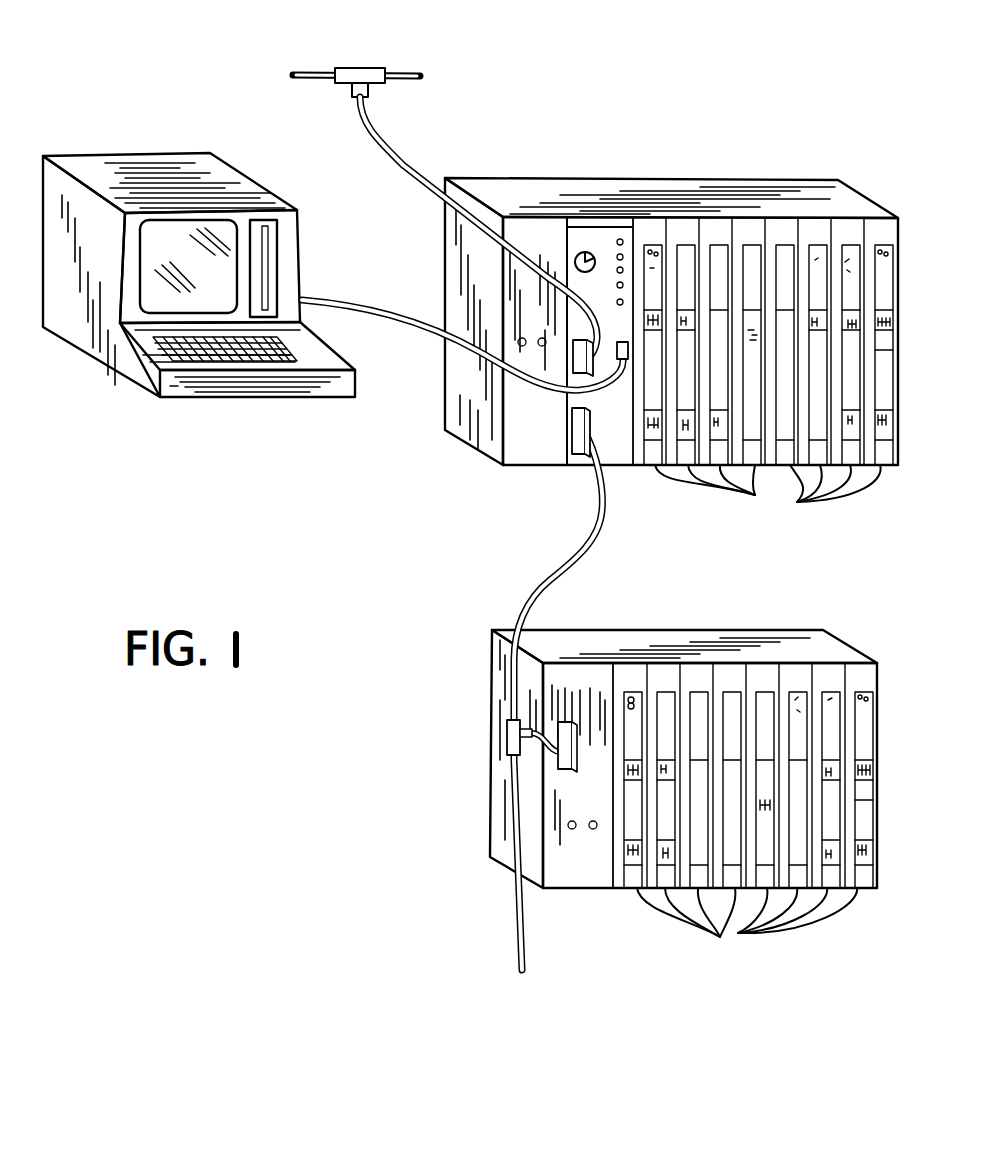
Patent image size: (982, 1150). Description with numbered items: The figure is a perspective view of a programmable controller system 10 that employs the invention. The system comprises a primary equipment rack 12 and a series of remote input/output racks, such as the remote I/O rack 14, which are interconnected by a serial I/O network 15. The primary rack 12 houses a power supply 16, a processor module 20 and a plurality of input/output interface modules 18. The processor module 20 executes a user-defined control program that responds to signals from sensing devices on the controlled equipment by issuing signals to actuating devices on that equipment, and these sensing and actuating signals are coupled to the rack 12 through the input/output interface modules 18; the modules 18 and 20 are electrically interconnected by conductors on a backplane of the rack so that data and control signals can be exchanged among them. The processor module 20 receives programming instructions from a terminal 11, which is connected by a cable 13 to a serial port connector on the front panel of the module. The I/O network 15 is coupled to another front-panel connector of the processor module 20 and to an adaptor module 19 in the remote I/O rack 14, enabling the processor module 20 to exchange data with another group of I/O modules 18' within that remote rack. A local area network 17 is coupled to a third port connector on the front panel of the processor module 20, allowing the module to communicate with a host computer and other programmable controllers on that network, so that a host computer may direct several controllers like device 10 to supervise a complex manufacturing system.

The programmable controller system 10 is at (398, 480).
The terminal 11 is at (308, 280).
The primary equipment rack 12 is at (643, 172).
The cable 13 is at (418, 328).
The remote input/output rack 14 is at (703, 620).
The serial I/O network 15 is at (570, 553).
The power supply 16 is at (537, 458).
The local area network 17 is at (385, 157).
The input/output interface modules 18 is at (768, 494).
The I/O modules 18' is at (747, 929).
The adaptor module 19 is at (573, 888).
The processor module 20 is at (620, 460).